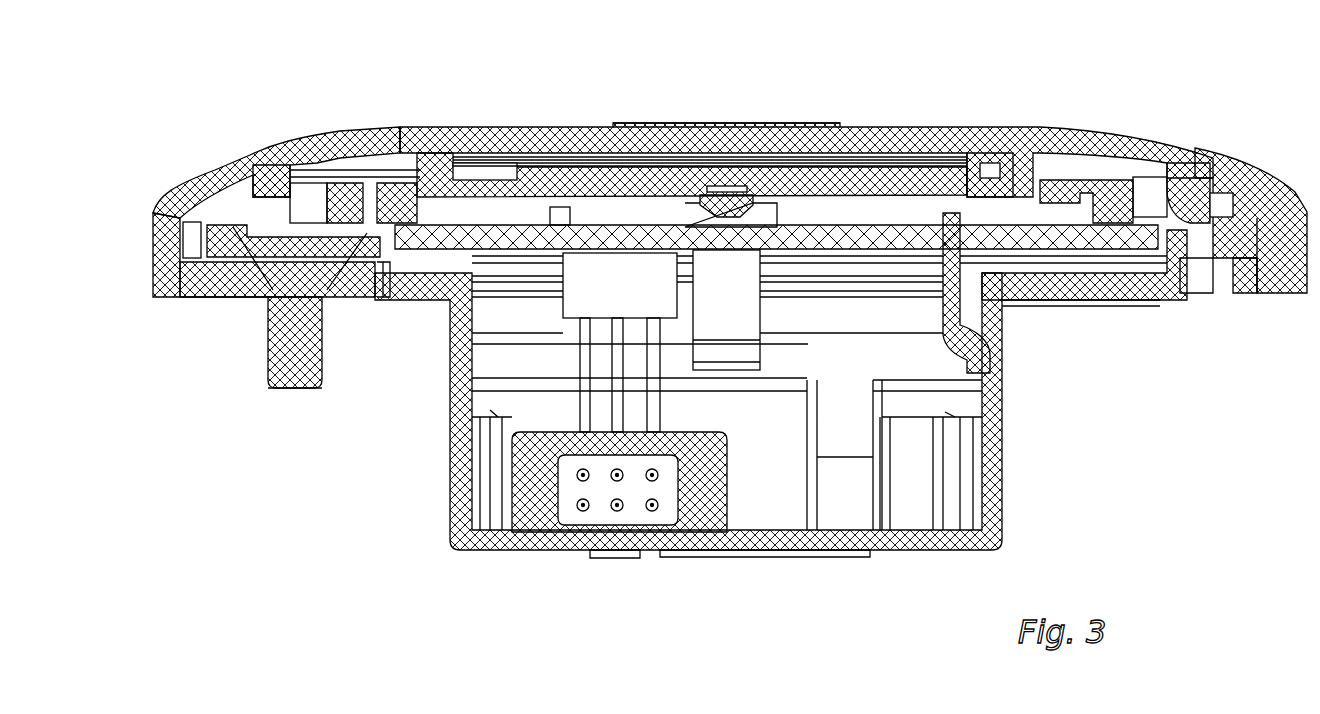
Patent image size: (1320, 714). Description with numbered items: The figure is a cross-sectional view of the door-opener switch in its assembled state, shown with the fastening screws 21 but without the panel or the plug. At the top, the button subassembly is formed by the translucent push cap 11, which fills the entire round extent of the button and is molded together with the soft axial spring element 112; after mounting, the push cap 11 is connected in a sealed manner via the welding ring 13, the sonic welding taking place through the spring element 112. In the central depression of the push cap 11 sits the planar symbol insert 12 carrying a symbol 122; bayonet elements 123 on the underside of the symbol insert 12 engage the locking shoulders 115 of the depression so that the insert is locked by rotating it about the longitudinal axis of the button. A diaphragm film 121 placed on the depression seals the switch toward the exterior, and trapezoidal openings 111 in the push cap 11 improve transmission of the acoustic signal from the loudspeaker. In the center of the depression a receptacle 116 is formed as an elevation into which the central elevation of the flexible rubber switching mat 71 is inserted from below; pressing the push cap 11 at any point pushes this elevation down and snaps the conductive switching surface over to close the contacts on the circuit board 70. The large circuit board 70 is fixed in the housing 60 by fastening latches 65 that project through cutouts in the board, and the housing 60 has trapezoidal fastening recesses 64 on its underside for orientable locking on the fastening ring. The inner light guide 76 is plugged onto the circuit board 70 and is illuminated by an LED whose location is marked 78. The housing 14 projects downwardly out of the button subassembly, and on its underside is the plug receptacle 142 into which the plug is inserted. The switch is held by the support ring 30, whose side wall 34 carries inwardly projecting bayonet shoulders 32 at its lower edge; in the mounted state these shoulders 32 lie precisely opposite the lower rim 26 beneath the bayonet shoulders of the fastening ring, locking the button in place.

The push cap 11 is at (355, 160).
The symbol insert 12 is at (553, 140).
The welding ring 13 is at (1227, 188).
The housing 14 is at (1002, 468).
The fastening screws 21 is at (267, 383).
The lower rim 26 is at (200, 298).
The support ring 30 is at (222, 177).
The inwardly projecting bayonet shoulders 32 is at (170, 297).
The side wall 34 is at (153, 256).
The housing 60 is at (1130, 297).
The trapezoidal fastening recesses 64 is at (367, 307).
The fastening latches 65 is at (943, 300).
The circuit board 70 is at (462, 238).
The switching mat 71 is at (735, 200).
The inner light guide portion 76 is at (397, 190).
The LED 78 is at (1058, 215).
The trapezoidal openings 111 is at (858, 185).
The axial spring element 112 is at (1200, 147).
The locking shoulders 115 is at (447, 160).
The receptacle 116 is at (690, 175).
The diaphragm film 121 is at (903, 200).
The symbol 122 is at (820, 135).
The bayonet elements 123 is at (993, 185).
The plug receptacle 142 is at (530, 462).